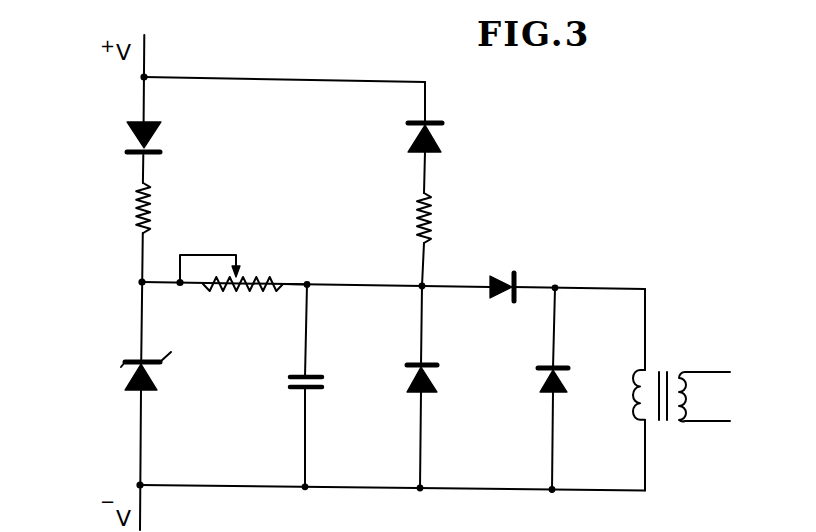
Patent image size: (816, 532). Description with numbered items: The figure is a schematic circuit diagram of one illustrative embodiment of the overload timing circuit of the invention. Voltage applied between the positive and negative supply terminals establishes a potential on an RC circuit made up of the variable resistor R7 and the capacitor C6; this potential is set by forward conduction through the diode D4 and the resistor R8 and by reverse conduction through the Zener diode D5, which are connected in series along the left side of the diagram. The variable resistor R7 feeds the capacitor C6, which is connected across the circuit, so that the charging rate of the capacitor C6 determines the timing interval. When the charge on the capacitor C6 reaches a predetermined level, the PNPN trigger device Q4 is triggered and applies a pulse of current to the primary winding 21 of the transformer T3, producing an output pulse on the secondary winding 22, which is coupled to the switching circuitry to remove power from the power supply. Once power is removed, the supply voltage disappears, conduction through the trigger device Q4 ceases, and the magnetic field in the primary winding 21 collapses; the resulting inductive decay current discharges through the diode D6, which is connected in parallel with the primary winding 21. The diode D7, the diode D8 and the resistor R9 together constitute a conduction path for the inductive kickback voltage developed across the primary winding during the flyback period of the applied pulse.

The diode D4 is at (132, 138).
The resistor R8 is at (134, 200).
The Zener diode D5 is at (127, 368).
The variable resistor R7 is at (254, 279).
The capacitor C6 is at (283, 370).
The diode D8 is at (408, 138).
The resistor R9 is at (412, 203).
The PNPN trigger device Q4 is at (499, 274).
The diode D7 is at (405, 382).
The diode D6 is at (537, 380).
The transformer T3 is at (671, 392).
The primary winding 21 is at (633, 405).
The secondary winding 22 is at (692, 400).